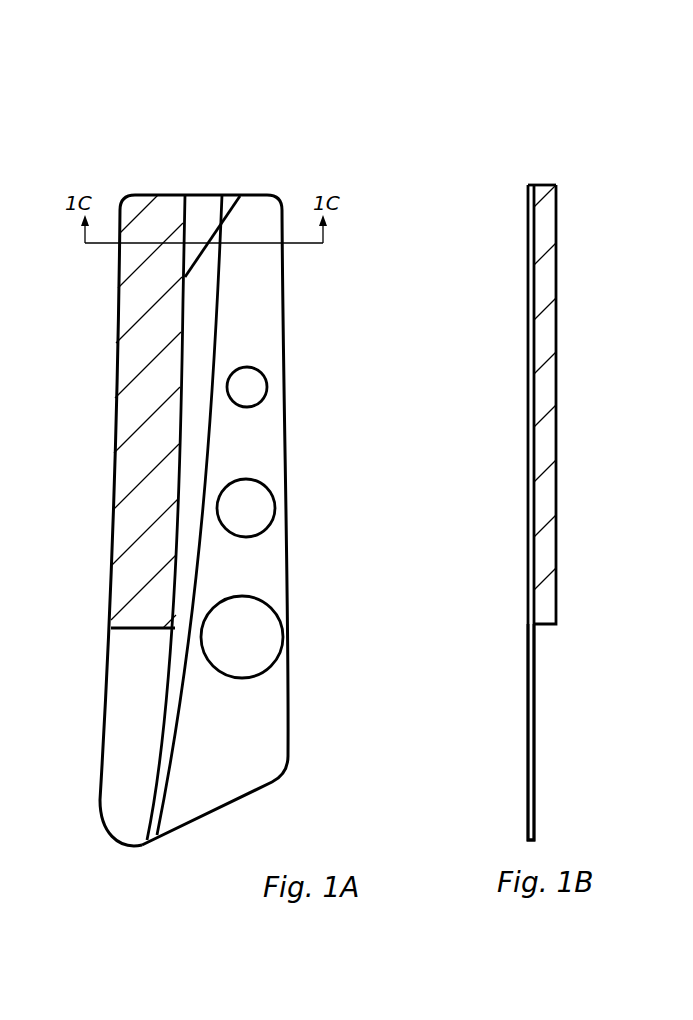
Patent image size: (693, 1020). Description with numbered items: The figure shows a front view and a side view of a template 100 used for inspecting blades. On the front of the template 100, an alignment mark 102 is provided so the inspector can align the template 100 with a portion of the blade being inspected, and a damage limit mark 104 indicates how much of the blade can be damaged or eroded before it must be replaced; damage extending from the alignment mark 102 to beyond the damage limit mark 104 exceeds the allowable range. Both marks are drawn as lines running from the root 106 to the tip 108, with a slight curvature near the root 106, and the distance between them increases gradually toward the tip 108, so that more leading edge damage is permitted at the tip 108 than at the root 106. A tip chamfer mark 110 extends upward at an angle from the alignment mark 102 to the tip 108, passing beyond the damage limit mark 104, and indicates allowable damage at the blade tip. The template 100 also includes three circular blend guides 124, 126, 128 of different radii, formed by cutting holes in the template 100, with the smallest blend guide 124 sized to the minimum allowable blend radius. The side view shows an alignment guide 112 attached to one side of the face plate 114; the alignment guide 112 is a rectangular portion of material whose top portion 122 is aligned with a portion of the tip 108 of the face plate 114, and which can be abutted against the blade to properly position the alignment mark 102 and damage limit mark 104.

In FIG. 1A, the template 100 is at (304, 128).
In FIG. 1B, the template 100 is at (568, 133).
In FIG. 1A, the alignment mark 102 is at (140, 836).
In FIG. 1A, the damage limit mark 104 is at (163, 827).
In FIG. 1A, the root 106 is at (243, 798).
In FIG. 1A, the tip 108 is at (207, 195).
In FIG. 1B, the tip 108 is at (527, 185).
In FIG. 1A, the tip chamfer mark 110 is at (232, 195).
In FIG. 1A, the alignment guide 112 is at (118, 382).
In FIG. 1B, the alignment guide 112 is at (557, 392).
In FIG. 1B, the face plate 114 is at (530, 686).
In FIG. 1B, the top portion 122 is at (556, 185).
In FIG. 1A, the blend guide 124 is at (268, 382).
In FIG. 1A, the blend guide 126 is at (273, 507).
In FIG. 1A, the blend guide 128 is at (283, 637).